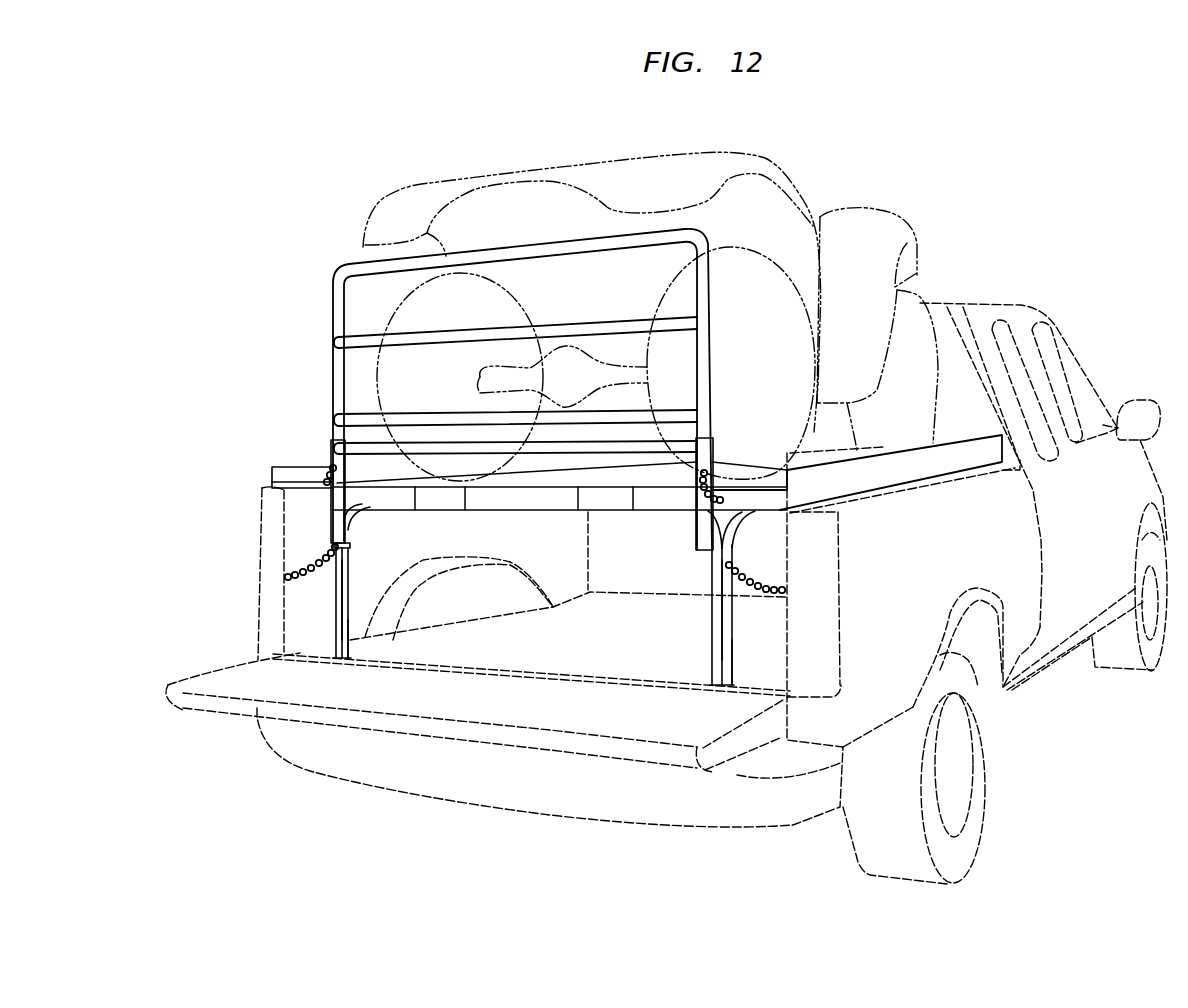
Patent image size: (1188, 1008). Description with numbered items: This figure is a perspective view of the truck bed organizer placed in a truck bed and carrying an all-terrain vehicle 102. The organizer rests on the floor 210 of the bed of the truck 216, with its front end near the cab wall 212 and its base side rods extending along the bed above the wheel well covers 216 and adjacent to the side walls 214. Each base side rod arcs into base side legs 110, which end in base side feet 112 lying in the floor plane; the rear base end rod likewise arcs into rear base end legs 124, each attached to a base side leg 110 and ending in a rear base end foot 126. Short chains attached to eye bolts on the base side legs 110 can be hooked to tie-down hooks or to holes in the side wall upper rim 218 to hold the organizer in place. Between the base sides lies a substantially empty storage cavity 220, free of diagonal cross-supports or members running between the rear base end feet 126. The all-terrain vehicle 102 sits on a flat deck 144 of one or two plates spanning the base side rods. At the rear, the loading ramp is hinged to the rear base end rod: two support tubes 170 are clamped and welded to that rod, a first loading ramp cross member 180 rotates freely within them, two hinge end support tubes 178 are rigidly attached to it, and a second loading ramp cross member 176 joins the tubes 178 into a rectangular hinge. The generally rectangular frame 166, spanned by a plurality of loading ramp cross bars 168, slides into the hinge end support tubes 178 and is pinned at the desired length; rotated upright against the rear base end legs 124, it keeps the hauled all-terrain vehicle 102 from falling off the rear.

The all-terrain vehicle 102 is at (776, 152).
The base side leg 110 is at (337, 602).
The base side foot 112 is at (337, 660).
The rear base end leg 124 is at (350, 598).
The rear base end foot 126 is at (348, 658).
The deck 144 is at (912, 482).
The generally rectangular frame 166 is at (357, 261).
The loading ramp cross bar 168 is at (591, 318).
The support tube 170 is at (432, 512).
The second loading ramp cross member 176 is at (618, 436).
The hinge end support tube 178 is at (332, 454).
The first loading ramp cross member 180 is at (568, 598).
The floor 210 is at (553, 652).
The cab wall 212 is at (950, 302).
The side wall 214 is at (302, 536).
The truck 216 is at (1108, 373).
The side wall upper rim 218 is at (263, 489).
The storage cavity 220 is at (603, 642).